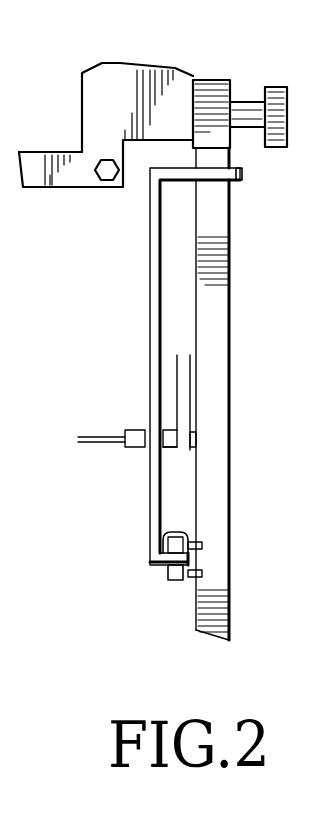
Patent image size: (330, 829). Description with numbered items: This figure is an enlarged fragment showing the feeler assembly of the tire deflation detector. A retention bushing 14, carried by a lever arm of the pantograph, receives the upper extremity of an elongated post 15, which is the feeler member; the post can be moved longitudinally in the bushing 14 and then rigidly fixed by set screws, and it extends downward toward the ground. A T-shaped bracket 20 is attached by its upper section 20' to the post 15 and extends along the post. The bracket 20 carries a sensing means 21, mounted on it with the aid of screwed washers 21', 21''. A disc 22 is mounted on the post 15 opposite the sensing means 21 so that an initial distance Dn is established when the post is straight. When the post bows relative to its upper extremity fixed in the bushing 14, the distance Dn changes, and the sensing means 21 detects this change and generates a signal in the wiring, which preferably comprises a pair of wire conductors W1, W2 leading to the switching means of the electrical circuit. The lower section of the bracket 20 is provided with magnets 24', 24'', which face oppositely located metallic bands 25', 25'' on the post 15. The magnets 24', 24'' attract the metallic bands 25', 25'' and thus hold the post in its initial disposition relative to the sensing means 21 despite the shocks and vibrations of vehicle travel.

The retention bushing 14 is at (213, 98).
The elongated post 15 is at (215, 283).
The T-shaped bracket 20 is at (173, 366).
The upper section of bracket 20' is at (273, 183).
The sensing means 21 is at (144, 401).
The screwed washer 21' is at (122, 468).
The screwed washer 21'' is at (229, 475).
The disc 22 is at (197, 437).
The initial distance Dn is at (133, 354).
The wire conductor W1 is at (100, 435).
The wire conductor W2 is at (95, 443).
The magnet 24'' is at (136, 533).
The metallic band 25'' is at (244, 544).
The magnet 24' is at (161, 596).
The metallic band 25' is at (239, 587).